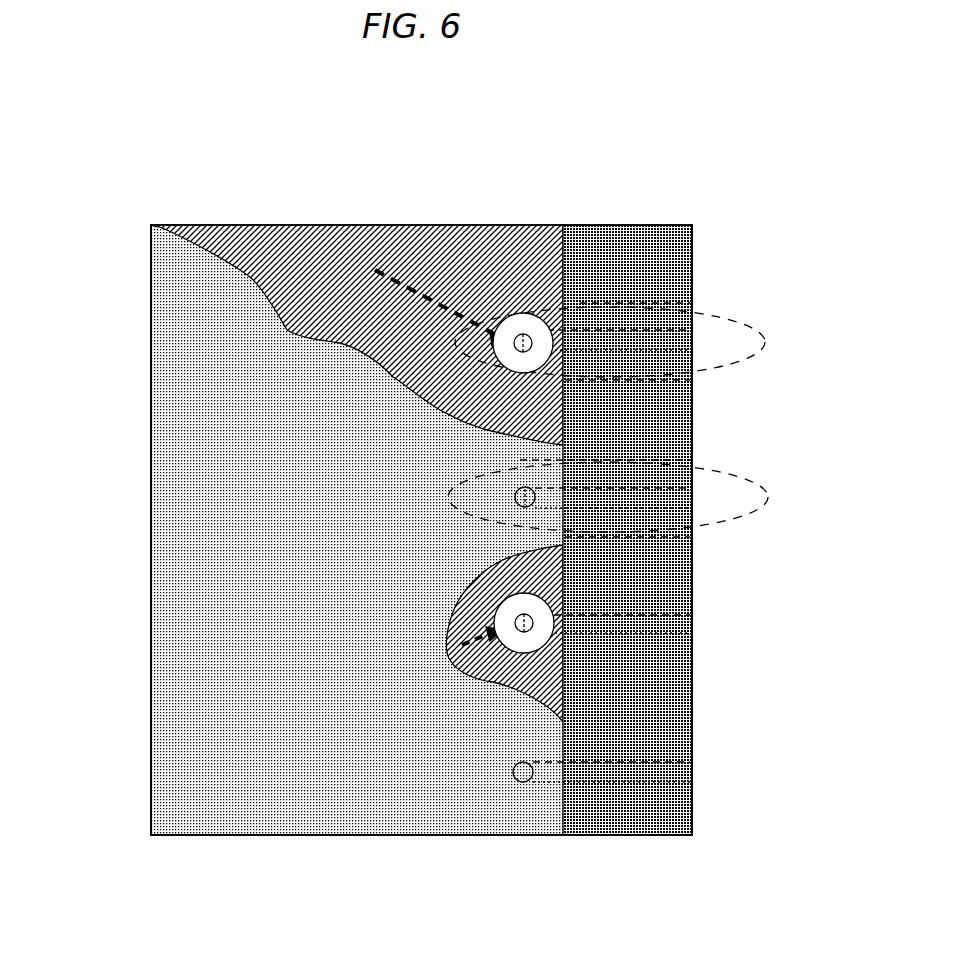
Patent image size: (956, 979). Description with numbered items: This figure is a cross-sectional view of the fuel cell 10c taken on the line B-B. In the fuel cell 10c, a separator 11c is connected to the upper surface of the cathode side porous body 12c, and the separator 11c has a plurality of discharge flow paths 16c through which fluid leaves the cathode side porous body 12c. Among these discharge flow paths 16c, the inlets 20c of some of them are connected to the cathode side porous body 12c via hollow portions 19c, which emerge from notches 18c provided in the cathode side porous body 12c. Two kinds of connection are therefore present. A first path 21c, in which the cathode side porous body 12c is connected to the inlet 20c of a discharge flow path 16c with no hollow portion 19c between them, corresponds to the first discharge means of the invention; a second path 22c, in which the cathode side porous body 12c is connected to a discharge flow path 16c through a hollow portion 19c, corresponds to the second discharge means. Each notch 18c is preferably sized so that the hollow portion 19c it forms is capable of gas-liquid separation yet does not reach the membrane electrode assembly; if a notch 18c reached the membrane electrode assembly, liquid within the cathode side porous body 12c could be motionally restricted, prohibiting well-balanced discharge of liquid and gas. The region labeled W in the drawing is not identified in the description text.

The fuel cell 10c is at (634, 180).
The separator 11c is at (650, 810).
The cathode side porous body 12c is at (320, 243).
The discharge flow path 16c is at (650, 330).
The notch 18c is at (508, 310).
The hollow portion 19c is at (532, 320).
The inlet 20c is at (527, 657).
The first path 21c is at (728, 472).
The second path 22c is at (738, 320).
The workpiece W is at (172, 400).